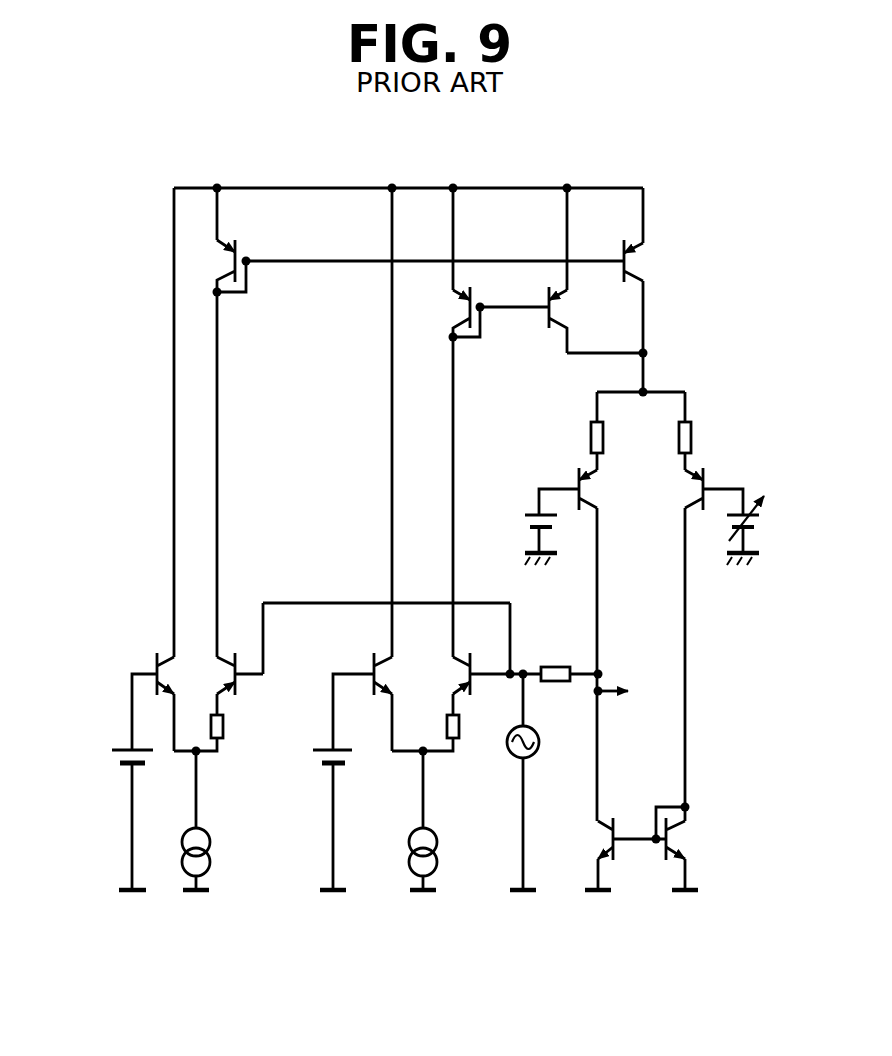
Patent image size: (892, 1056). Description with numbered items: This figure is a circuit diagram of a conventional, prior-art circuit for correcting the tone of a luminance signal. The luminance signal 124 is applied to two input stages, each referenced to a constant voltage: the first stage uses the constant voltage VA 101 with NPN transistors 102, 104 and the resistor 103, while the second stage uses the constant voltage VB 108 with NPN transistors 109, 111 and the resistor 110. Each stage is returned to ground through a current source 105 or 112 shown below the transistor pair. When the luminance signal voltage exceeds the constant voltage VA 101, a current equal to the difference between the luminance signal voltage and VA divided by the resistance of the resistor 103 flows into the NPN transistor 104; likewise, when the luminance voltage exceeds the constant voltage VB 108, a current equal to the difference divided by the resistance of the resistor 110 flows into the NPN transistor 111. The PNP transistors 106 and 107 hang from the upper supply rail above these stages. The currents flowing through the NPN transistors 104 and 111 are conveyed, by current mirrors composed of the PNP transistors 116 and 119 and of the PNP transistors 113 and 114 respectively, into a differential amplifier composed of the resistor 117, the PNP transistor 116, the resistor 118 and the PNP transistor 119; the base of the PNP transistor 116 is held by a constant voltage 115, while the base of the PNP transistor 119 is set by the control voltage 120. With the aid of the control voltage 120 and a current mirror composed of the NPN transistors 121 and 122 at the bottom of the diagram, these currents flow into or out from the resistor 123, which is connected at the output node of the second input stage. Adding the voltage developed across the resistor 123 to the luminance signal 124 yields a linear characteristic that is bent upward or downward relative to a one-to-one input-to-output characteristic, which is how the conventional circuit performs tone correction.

The constant voltage VA 101 is at (114, 818).
The NPN transistor 102 is at (151, 688).
The resistor 103 is at (221, 732).
The NPN transistor 104 is at (239, 670).
The current source 105 is at (216, 820).
The PNP transistor 106 is at (241, 283).
The PNP transistor 107 is at (653, 261).
The constant voltage VB 108 is at (310, 818).
The NPN transistor 109 is at (362, 689).
The resistor 110 is at (443, 732).
The NPN transistor 111 is at (525, 671).
The current source 112 is at (441, 820).
The PNP transistor 113 is at (501, 329).
The PNP transistor 114 is at (547, 322).
The constant voltage 115 is at (522, 535).
The PNP transistor 116 is at (568, 484).
The resistor 117 is at (615, 431).
The resistor 118 is at (705, 431).
The PNP transistor 119 is at (714, 485).
The control voltage 120 is at (759, 516).
The NPN transistor 121 is at (693, 854).
The NPN transistor 122 is at (635, 840).
The resistor 123 is at (553, 659).
The luminance signal 124 is at (543, 782).